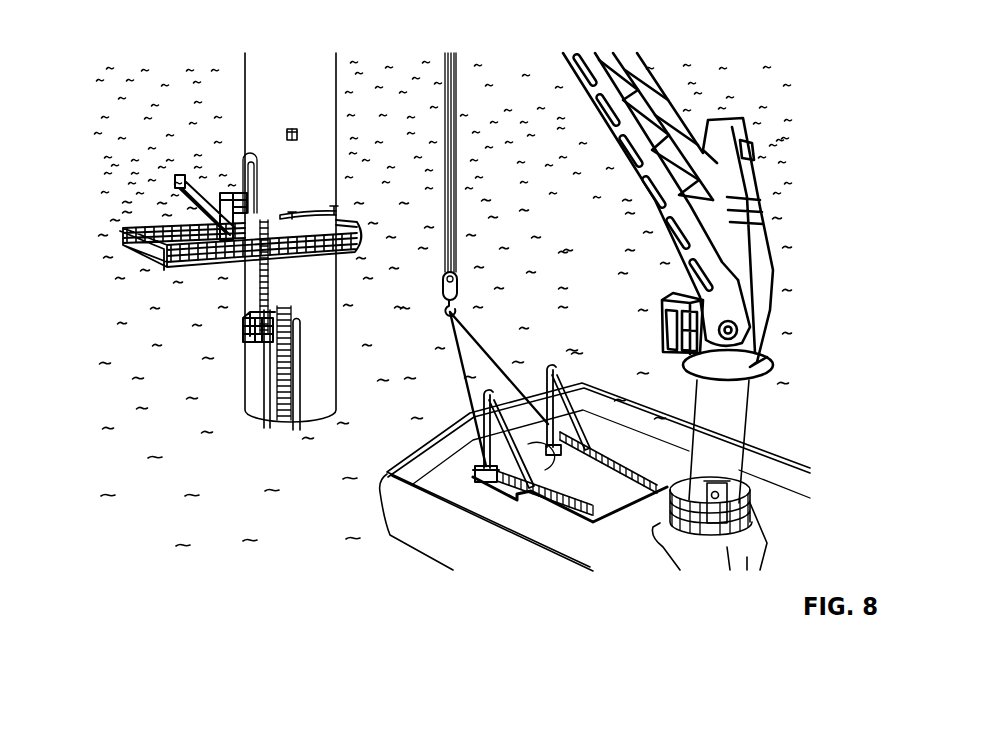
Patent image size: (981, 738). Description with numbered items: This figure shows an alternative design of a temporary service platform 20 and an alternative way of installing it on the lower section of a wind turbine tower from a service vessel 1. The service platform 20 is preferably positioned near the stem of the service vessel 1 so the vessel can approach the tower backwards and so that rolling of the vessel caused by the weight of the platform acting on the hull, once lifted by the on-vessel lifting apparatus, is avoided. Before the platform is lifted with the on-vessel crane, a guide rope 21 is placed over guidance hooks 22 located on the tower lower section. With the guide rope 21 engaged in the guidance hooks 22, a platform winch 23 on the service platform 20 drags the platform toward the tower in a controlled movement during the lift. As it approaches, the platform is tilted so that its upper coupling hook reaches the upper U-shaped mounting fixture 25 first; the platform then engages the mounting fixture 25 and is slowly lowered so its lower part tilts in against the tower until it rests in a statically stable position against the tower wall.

The service vessel 1 is at (520, 557).
The service platform 20 is at (612, 493).
The guide rope 21 is at (453, 367).
The guidance hooks 22 is at (337, 208).
The platform winch 23 is at (478, 470).
The upper U-shaped mounting fixture 25 is at (287, 134).